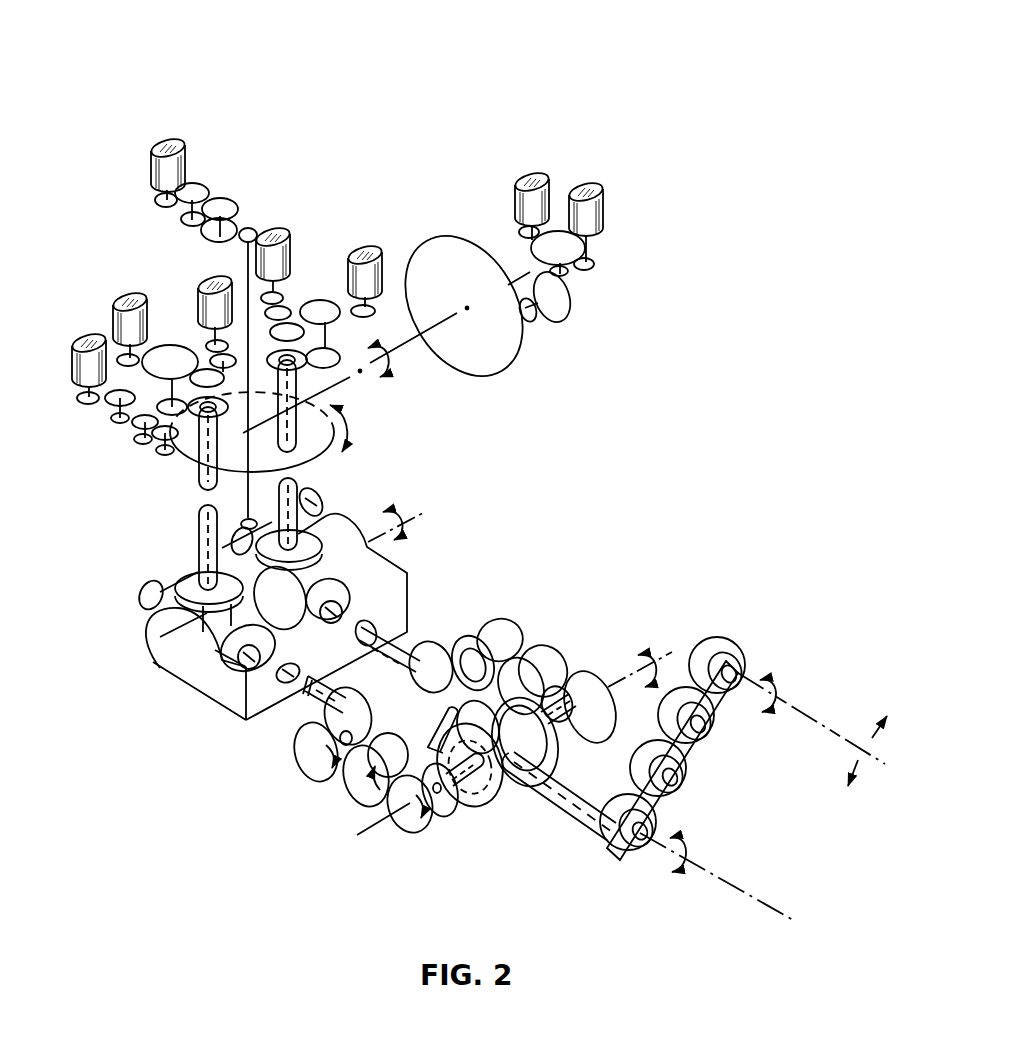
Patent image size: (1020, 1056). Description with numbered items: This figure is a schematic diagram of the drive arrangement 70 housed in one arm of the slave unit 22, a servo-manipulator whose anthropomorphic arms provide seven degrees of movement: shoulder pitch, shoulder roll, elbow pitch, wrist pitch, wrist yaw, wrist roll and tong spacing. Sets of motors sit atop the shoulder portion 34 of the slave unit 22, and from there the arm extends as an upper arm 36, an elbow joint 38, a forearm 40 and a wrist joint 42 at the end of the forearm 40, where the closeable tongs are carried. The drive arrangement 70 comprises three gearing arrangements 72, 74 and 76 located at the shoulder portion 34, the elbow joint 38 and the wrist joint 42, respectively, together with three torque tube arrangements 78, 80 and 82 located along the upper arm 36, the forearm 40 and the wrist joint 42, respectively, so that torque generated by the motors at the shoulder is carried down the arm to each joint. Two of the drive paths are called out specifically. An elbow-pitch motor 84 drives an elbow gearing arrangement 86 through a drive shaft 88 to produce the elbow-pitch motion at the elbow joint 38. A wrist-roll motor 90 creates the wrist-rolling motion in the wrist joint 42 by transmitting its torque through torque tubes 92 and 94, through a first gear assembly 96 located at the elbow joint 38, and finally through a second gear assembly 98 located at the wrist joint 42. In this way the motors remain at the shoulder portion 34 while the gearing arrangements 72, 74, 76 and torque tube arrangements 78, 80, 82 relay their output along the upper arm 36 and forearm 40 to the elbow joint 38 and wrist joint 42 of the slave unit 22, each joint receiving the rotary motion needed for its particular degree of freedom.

The slave unit 22 is at (582, 128).
The shoulder portion 34 is at (558, 254).
The upper arm 36 is at (356, 386).
The elbow joint 38 is at (518, 505).
The forearm 40 is at (556, 538).
The wrist joint 42 is at (644, 595).
The drive arrangement 70 is at (262, 830).
The gearing arrangement 72 is at (103, 422).
The gearing arrangement 74 is at (133, 613).
The gearing arrangement 76 is at (353, 812).
The torque tube arrangement 78 is at (147, 530).
The torque tube arrangement 80 is at (417, 640).
The torque tube arrangement 82 is at (557, 800).
The elbow-pitch motor 84 is at (152, 170).
The elbow gearing arrangement 86 is at (226, 532).
The drive shaft 88 is at (248, 288).
The wrist-roll motor 90 is at (207, 277).
The torque tube 92 is at (207, 537).
The torque tube 94 is at (306, 708).
The first gear assembly 96 is at (187, 650).
The second gear assembly 98 is at (453, 817).